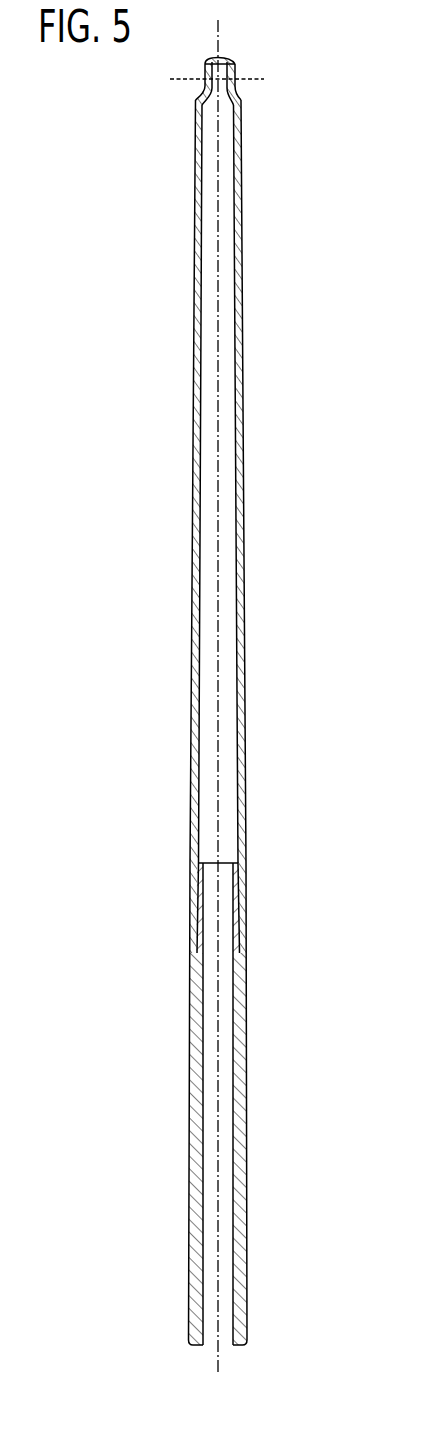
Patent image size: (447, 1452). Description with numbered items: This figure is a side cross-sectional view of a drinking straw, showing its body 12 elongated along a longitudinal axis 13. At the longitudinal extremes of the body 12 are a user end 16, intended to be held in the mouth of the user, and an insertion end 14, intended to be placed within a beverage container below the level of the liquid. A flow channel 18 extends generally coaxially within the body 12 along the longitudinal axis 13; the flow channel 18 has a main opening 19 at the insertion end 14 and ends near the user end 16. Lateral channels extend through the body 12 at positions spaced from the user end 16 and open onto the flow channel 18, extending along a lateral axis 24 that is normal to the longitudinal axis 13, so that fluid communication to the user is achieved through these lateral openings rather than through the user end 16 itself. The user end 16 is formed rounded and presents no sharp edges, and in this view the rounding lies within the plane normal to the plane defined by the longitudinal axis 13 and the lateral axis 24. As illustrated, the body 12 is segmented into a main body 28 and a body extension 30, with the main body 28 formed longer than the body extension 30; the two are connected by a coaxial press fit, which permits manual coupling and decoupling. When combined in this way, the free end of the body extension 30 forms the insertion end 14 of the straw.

The body 12 is at (193, 530).
The longitudinal axis 13 is at (218, 424).
The insertion end 14 is at (229, 1338).
The user end 16 is at (226, 62).
The flow channel 18 is at (210, 313).
The main opening 19 is at (208, 1338).
The lateral axis 24 is at (186, 80).
The main body 28 is at (192, 717).
The body extension 30 is at (189, 1066).